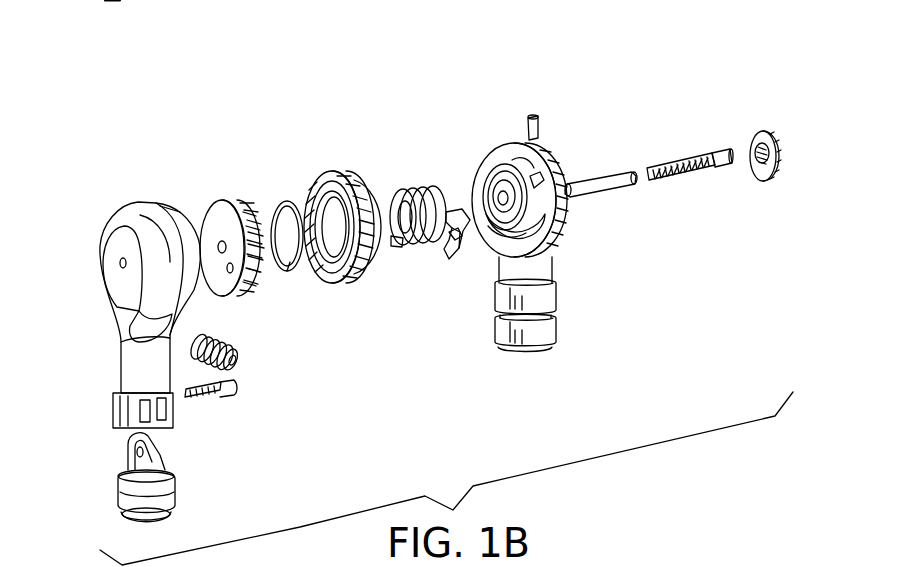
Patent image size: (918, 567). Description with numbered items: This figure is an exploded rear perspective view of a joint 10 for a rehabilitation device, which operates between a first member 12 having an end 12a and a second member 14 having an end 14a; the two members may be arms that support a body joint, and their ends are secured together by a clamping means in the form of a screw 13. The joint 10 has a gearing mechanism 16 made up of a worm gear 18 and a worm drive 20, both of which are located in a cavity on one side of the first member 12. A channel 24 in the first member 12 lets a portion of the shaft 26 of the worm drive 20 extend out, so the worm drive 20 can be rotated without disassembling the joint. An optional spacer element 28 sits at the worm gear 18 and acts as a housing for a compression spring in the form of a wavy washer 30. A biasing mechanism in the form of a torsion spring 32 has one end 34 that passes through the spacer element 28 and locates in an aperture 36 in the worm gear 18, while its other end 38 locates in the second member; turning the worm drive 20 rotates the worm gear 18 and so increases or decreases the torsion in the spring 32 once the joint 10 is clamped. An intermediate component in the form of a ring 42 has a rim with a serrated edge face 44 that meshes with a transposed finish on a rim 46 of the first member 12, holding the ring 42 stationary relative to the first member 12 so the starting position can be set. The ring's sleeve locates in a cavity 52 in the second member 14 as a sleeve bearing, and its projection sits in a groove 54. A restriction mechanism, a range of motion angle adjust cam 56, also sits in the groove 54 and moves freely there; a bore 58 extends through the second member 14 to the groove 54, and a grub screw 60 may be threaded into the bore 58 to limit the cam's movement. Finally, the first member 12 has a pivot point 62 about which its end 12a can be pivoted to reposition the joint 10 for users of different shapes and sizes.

The joint 10 is at (605, 60).
The first member 12 is at (96, 309).
The end of first member 12a is at (193, 235).
The screw 13 is at (698, 180).
The second member 14 is at (574, 240).
The end of second member 14a is at (524, 163).
The gearing mechanism 16 is at (264, 316).
The worm gear 18 is at (222, 217).
The worm drive 20 is at (238, 366).
The channel 24 is at (172, 314).
The shaft 26 is at (212, 367).
The spacer element 28 is at (248, 204).
The wavy washer 30 is at (290, 268).
The torsion spring 32 is at (423, 188).
The end of torsion spring 34 is at (398, 244).
The aperture 36 is at (227, 270).
The other end of torsion spring 38 is at (449, 210).
The ring 42 is at (350, 158).
The serrated edge face 44 is at (322, 178).
The rim 46 is at (170, 203).
The cavity 52 is at (497, 174).
The groove 54 is at (496, 240).
The range of motion angle adjust cam 56 is at (453, 236).
The bore 58 is at (540, 178).
The grub screw 60 is at (536, 119).
The pivot point 62 is at (118, 440).